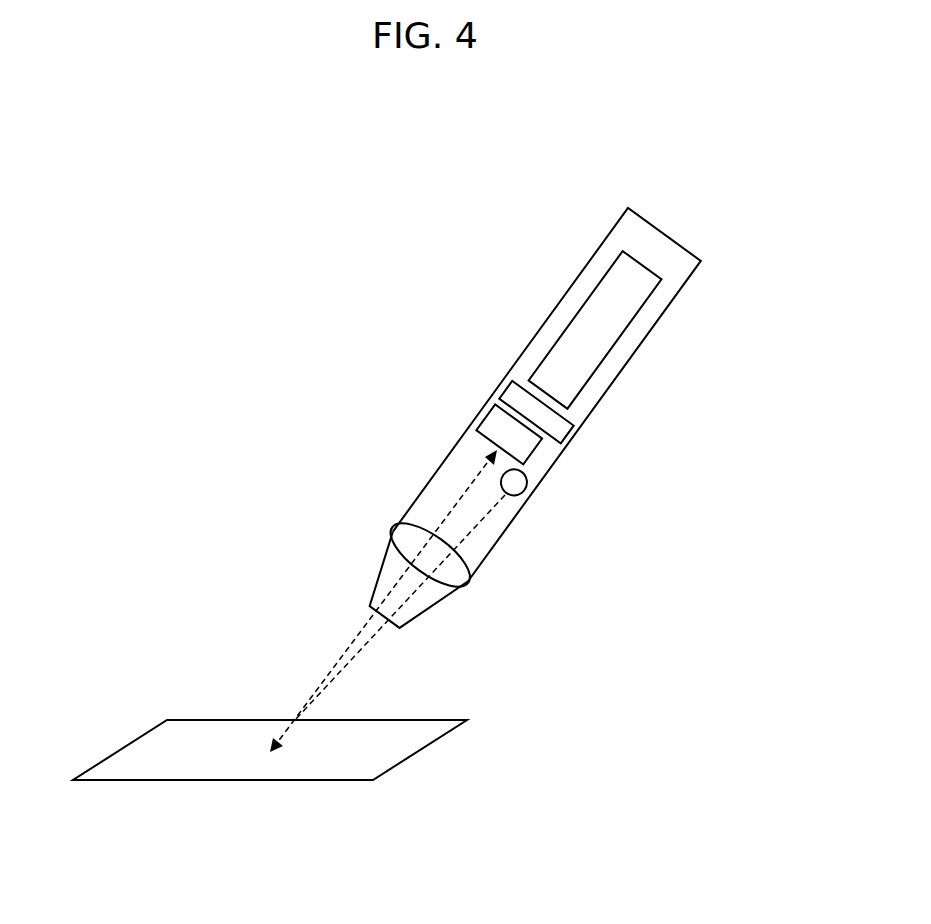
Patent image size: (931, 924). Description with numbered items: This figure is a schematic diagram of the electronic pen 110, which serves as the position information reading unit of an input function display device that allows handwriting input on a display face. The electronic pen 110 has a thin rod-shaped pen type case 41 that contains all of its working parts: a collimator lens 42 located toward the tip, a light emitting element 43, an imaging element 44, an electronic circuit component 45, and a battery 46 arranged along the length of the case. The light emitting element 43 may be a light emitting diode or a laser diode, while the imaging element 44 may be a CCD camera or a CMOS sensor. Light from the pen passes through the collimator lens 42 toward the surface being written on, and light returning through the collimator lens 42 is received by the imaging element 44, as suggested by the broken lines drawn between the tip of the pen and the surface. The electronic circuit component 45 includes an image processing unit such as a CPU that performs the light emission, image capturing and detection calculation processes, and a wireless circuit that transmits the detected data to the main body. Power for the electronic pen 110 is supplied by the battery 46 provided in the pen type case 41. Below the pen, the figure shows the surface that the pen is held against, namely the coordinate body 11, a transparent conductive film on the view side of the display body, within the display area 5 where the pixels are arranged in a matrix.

The electronic pen 110 is at (686, 200).
The pen type case 41 is at (568, 436).
The battery 46 is at (595, 330).
The electronic circuit component 45 is at (536, 412).
The imaging element 44 is at (509, 434).
The light emitting element 43 is at (514, 482).
The collimator lens 42 is at (430, 555).
The coordinate body 11 is at (420, 750).
The display area 5 is at (312, 790).